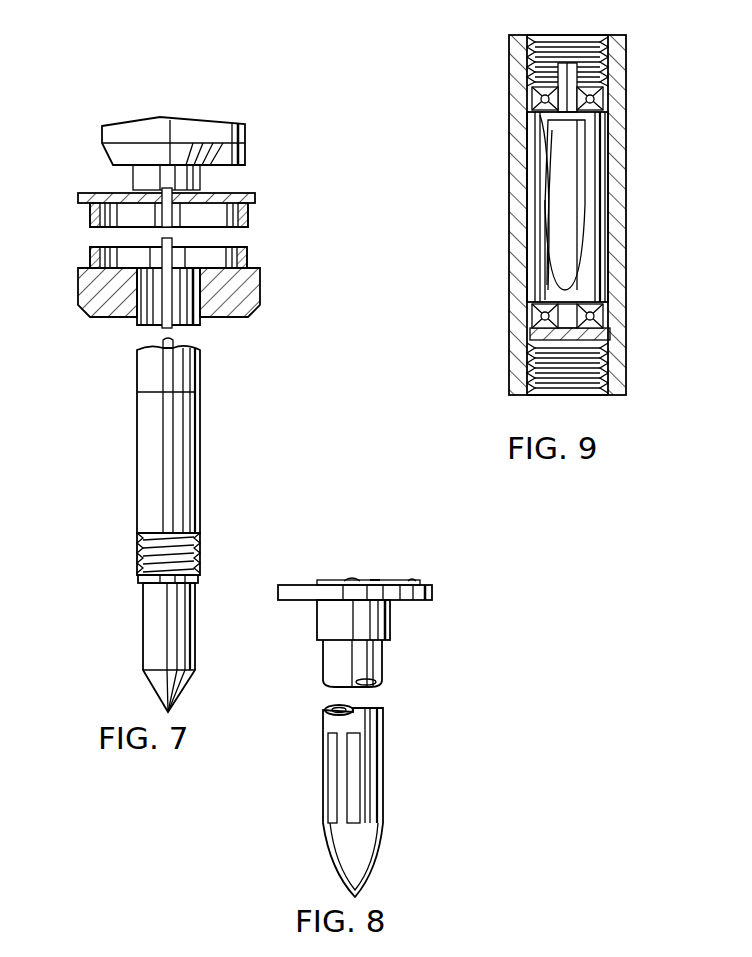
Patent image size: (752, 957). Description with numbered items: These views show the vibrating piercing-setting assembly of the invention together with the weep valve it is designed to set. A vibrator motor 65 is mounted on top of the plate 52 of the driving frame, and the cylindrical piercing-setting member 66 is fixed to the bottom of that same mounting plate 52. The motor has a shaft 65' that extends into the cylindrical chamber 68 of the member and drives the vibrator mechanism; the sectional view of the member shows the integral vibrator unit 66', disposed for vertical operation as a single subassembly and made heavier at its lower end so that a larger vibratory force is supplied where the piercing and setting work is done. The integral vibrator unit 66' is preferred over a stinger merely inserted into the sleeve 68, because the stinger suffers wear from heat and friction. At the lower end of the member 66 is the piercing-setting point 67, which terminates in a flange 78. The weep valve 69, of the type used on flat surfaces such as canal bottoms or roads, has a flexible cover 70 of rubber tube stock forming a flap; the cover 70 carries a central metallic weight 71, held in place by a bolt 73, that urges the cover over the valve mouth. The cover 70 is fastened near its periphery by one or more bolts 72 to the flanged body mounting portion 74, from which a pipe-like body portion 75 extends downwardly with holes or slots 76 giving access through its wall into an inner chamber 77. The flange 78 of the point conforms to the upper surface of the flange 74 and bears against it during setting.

In FIG. 7, the plate 52 is at (253, 192).
In FIG. 7, the vibrator motor 65 is at (201, 153).
In FIG. 7, the shaft 65' is at (142, 280).
In FIG. 7, the piercing-setting member 66 is at (197, 435).
In FIG. 9, the piercing-setting member 66 is at (535, 215).
In FIG. 9, the integral vibrator unit 66' is at (614, 205).
In FIG. 7, the piercing-setting point 67 is at (193, 662).
In FIG. 9, the cylindrical chamber 68 is at (537, 285).
In FIG. 8, the weep valve 69 is at (383, 665).
In FIG. 8, the flexible cover 70 is at (310, 583).
In FIG. 8, the central metallic weight 71 is at (373, 582).
In FIG. 8, the bolts 72 is at (413, 580).
In FIG. 8, the bolt 73 is at (357, 580).
In FIG. 8, the flanged body mounting portion 74 is at (432, 593).
In FIG. 8, the pipe-like body portion 75 is at (383, 732).
In FIG. 8, the holes or slots 76 is at (380, 823).
In FIG. 8, the inner chamber 77 is at (330, 708).
In FIG. 7, the flange 78 is at (138, 580).